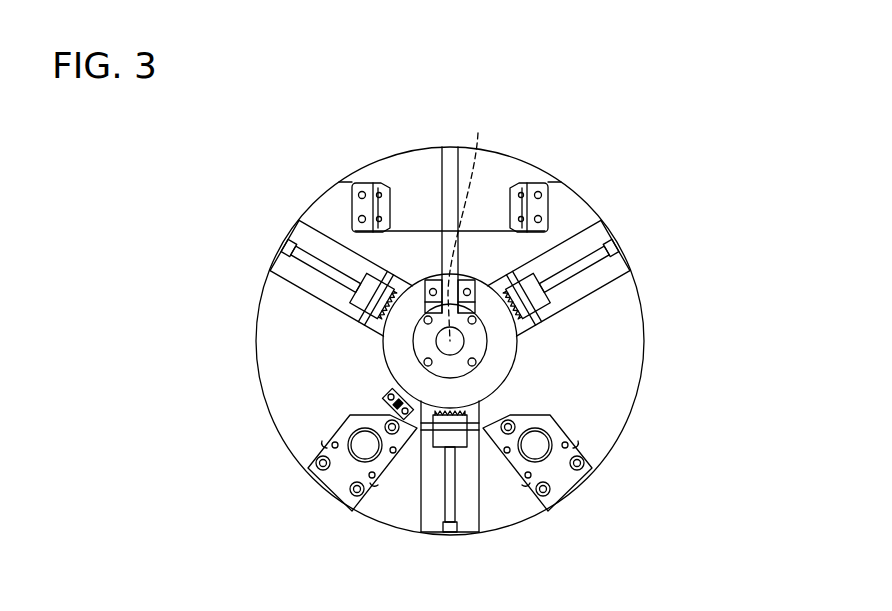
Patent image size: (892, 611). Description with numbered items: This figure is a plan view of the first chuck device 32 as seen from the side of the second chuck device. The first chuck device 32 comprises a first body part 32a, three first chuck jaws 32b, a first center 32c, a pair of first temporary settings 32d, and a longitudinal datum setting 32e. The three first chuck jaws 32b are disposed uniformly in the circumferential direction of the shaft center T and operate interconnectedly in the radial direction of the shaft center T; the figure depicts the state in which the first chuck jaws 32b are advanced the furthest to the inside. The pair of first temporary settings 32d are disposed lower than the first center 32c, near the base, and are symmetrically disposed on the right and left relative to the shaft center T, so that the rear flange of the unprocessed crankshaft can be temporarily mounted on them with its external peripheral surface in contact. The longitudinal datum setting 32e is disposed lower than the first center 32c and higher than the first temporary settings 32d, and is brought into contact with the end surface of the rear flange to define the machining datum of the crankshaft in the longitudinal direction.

The first chuck device 32 is at (612, 178).
The first body part 32a is at (632, 283).
The first chuck jaws 32b is at (378, 316).
The first center 32c is at (450, 341).
The first temporary settings 32d is at (368, 462).
The longitudinal datum setting 32e is at (384, 394).
The shaft center T is at (463, 222).